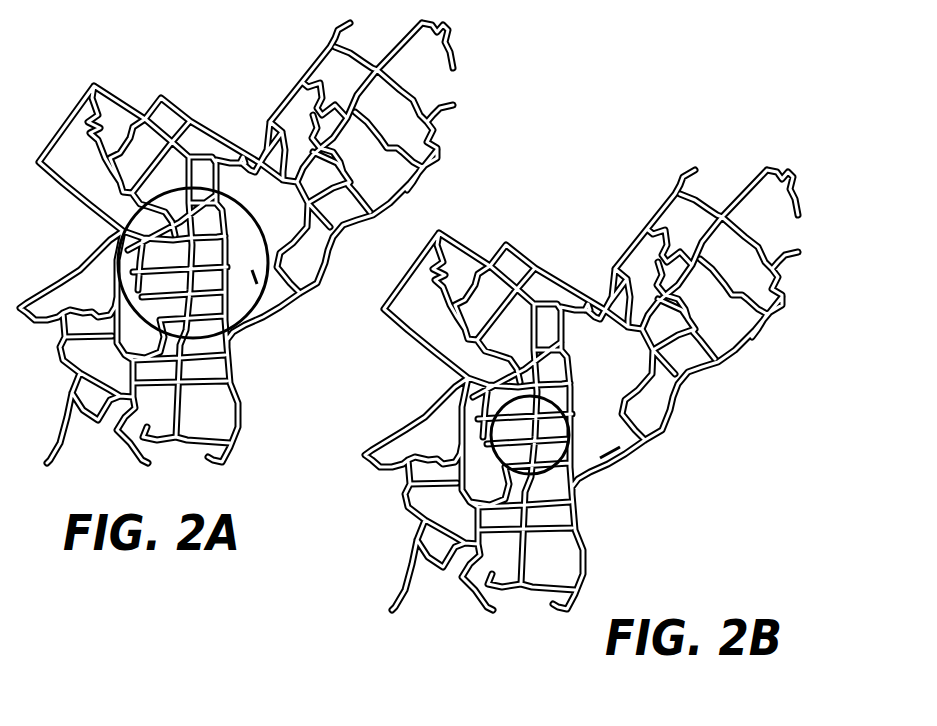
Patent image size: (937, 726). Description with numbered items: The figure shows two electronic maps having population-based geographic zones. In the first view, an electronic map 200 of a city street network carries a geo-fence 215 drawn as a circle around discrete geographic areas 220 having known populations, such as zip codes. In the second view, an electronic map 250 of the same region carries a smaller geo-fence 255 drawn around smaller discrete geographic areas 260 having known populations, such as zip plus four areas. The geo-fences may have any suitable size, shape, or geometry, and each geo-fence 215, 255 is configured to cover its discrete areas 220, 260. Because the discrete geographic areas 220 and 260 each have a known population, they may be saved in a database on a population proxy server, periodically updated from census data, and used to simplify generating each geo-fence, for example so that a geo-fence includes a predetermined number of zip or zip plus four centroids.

In FIG. 2A, the electronic map 200 is at (466, 64).
In FIG. 2A, the geo-fence 215 is at (120, 231).
In FIG. 2A, the discrete geographic areas 220 is at (288, 332).
In FIG. 2B, the electronic map 250 is at (800, 236).
In FIG. 2B, the geo-fence 255 is at (572, 424).
In FIG. 2B, the smaller discrete geographic areas 260 is at (566, 430).